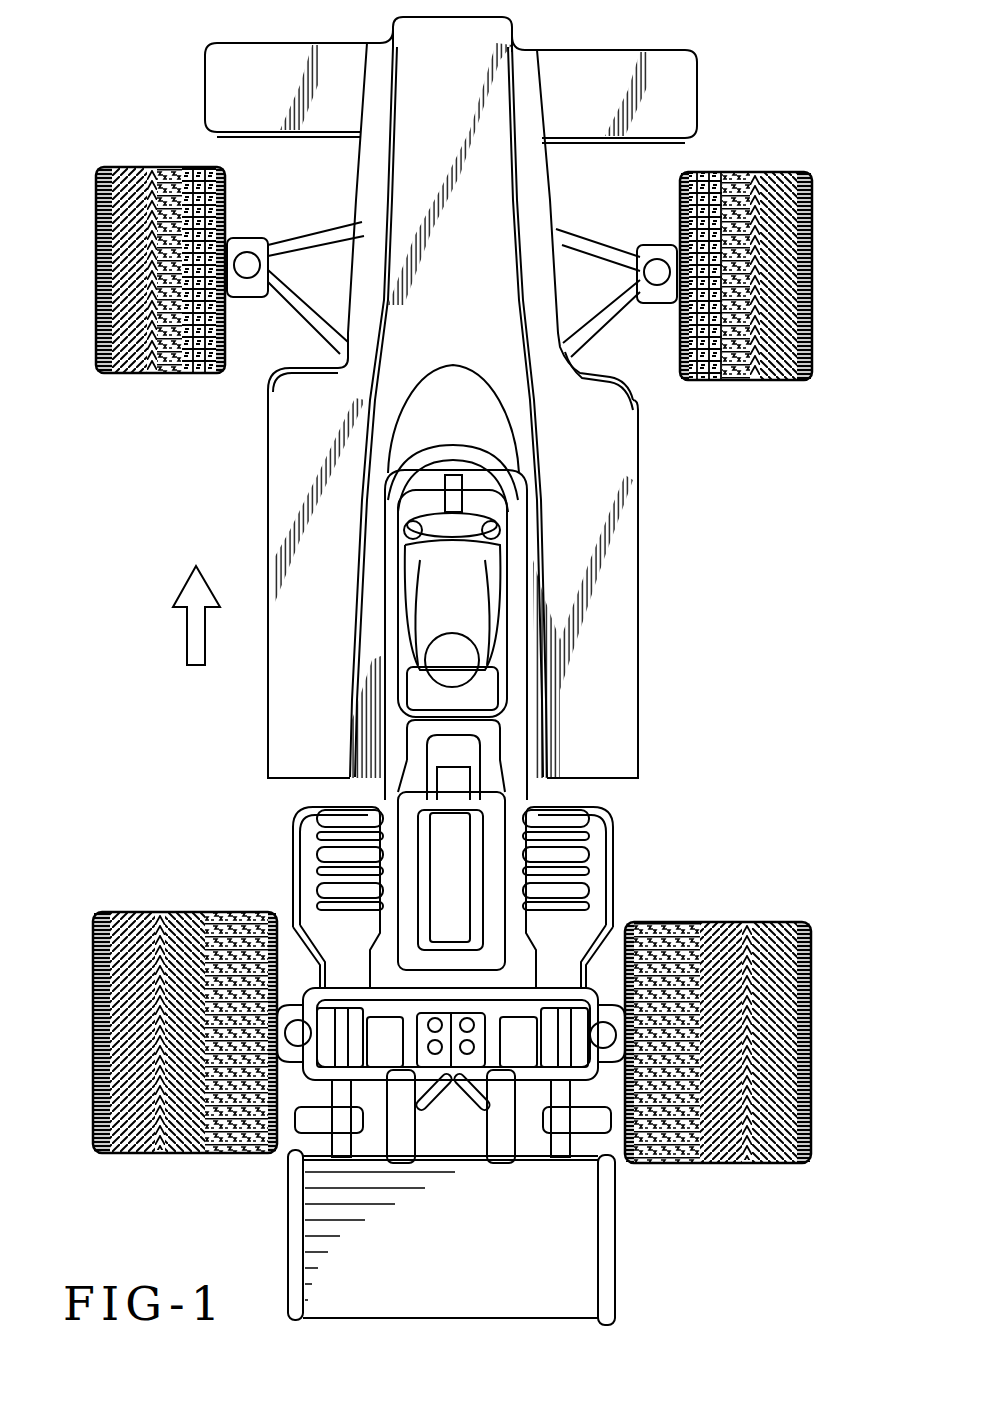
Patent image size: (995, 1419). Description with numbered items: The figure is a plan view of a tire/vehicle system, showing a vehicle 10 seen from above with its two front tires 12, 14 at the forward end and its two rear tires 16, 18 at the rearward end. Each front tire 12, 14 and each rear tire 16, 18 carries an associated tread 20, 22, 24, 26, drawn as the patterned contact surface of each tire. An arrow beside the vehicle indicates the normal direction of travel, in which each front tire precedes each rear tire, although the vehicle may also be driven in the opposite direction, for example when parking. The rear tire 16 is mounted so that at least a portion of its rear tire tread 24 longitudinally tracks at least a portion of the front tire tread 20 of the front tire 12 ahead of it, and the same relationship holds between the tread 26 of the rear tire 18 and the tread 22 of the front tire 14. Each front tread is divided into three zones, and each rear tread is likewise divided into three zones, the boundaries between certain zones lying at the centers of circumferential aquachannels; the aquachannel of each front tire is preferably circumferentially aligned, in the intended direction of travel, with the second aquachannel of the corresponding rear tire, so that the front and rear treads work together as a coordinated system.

The vehicle 10 is at (655, 659).
The front tire 12 is at (764, 286).
The front tire 14 is at (148, 275).
The rear tire 16 is at (749, 966).
The rear tire 18 is at (156, 953).
The tread 20 is at (806, 381).
The tread 22 is at (100, 374).
The tread 24 is at (812, 922).
The tread 26 is at (96, 912).